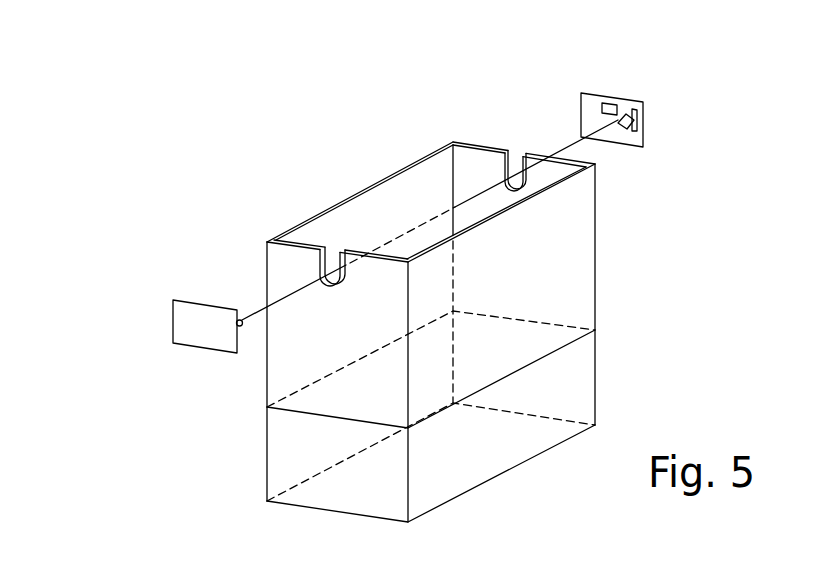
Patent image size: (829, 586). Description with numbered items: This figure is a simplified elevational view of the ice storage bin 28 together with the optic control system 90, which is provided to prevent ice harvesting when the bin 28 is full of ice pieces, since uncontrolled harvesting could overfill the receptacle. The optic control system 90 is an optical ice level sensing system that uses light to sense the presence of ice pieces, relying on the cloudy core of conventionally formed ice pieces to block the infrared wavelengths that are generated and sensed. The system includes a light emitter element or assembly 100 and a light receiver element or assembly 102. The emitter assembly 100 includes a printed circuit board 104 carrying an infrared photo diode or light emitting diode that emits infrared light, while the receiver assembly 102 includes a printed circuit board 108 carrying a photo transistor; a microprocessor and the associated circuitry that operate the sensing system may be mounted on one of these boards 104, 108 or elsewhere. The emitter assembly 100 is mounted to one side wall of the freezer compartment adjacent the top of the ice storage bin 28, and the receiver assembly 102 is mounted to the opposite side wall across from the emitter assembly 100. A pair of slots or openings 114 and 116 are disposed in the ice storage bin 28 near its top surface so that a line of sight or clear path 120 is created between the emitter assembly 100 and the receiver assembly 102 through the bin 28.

The ice storage bin 28 is at (535, 282).
The optic control system 90 is at (256, 150).
The light emitter element or assembly 100 is at (150, 301).
The light receiver element or assembly 102 is at (597, 80).
The printed circuit board 104 is at (187, 347).
The printed circuit board 108 is at (645, 125).
The slot or opening 114 is at (333, 287).
The slot or opening 116 is at (503, 177).
The line of sight or clear path 120 is at (408, 223).